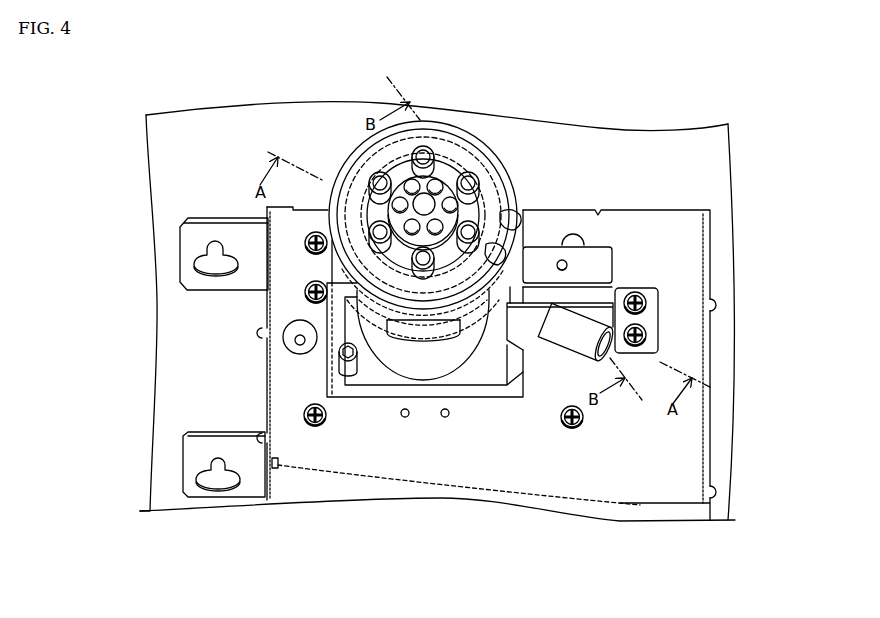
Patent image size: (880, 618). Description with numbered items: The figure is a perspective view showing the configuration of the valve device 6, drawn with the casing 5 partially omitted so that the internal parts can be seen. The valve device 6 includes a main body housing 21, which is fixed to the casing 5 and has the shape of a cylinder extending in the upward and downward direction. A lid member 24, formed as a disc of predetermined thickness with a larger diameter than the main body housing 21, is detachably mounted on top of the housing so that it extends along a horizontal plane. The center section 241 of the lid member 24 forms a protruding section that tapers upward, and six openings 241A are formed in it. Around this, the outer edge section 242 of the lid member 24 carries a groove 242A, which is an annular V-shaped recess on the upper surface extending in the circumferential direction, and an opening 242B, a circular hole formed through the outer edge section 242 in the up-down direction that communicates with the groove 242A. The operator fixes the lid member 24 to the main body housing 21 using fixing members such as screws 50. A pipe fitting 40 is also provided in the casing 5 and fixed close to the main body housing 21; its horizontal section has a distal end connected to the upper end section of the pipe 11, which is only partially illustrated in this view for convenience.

The casing 5 is at (692, 335).
The valve device 6 is at (552, 181).
The pipe 11 is at (567, 342).
The main body housing 21 is at (387, 357).
The lid member 24 is at (318, 217).
The pipe fitting 40 is at (522, 308).
The screws 50 is at (400, 229).
The center section 241 is at (449, 197).
The openings 241A is at (368, 186).
The outer edge section 242 is at (340, 257).
The groove 242A is at (490, 248).
The opening 242B is at (524, 225).